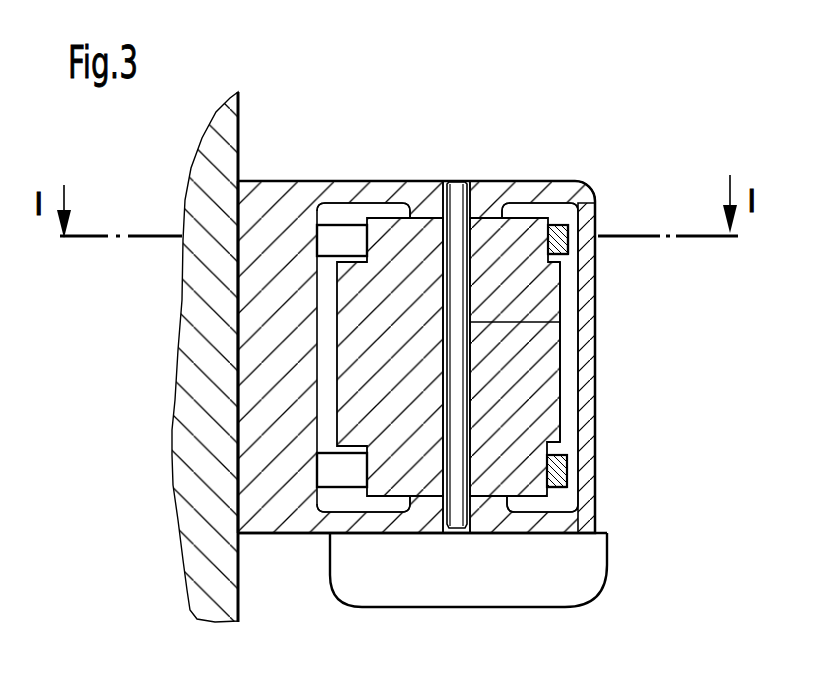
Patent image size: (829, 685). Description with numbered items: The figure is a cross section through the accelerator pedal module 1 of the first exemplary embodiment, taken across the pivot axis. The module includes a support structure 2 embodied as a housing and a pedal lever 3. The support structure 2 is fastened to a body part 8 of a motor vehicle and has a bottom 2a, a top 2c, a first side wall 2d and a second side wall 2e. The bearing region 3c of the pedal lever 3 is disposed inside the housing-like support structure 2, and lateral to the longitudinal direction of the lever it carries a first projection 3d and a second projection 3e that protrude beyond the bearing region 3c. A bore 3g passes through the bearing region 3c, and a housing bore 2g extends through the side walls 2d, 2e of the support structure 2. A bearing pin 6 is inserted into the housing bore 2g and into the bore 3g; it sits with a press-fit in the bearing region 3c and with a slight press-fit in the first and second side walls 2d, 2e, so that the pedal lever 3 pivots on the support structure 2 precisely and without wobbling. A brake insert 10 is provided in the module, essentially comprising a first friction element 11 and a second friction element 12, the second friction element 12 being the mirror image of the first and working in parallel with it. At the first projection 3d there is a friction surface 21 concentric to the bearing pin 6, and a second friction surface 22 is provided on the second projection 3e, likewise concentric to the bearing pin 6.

The accelerator pedal module 1 is at (505, 306).
The support structure 2 is at (422, 292).
The bottom 2a is at (180, 357).
The top 2c is at (620, 368).
The first side wall 2d is at (363, 160).
The second side wall 2e is at (363, 585).
The housing bore 2g is at (478, 317).
The pedal lever 3 is at (508, 357).
The bearing region 3c is at (598, 352).
The first projection 3d is at (540, 163).
The second projection 3e is at (542, 585).
The bore 3g is at (566, 324).
The bearing pin 6 is at (548, 355).
The body part 8 is at (180, 357).
The brake insert 10 is at (617, 191).
The first friction element 11 is at (574, 178).
The second friction element 12 is at (468, 360).
The friction surface 21 is at (604, 257).
The second friction surface 22 is at (585, 576).